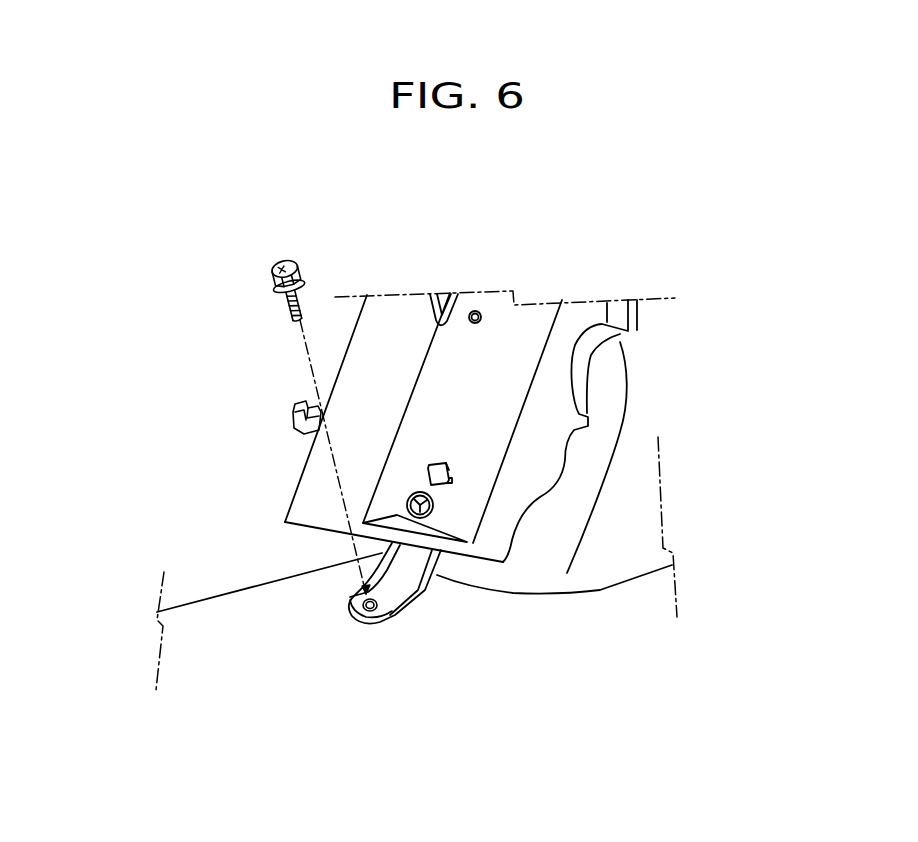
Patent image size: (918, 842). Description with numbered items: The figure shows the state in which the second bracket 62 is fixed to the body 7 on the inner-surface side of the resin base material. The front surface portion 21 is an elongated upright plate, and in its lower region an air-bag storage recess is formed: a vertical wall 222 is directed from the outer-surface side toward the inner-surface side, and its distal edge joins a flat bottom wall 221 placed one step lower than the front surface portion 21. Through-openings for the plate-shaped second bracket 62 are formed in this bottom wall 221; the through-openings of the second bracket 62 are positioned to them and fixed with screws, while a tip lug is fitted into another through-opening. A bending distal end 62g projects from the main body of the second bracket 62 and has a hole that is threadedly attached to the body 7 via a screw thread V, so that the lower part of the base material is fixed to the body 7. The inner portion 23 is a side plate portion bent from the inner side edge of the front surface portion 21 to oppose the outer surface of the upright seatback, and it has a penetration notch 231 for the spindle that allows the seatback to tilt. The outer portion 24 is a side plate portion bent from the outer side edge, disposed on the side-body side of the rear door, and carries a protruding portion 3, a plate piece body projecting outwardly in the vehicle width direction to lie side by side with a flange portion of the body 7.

The screw thread V is at (273, 285).
The protruding portion 3 is at (290, 413).
The front surface portion 21 is at (317, 467).
The vertical wall 222 is at (418, 383).
The bottom wall 221 is at (503, 373).
The outer portion 24 is at (290, 498).
The inner portion 23 is at (548, 413).
The penetration notch 231 is at (582, 357).
The body 7 is at (220, 607).
The second bracket 62 is at (438, 575).
The bending distal end 62g is at (390, 598).